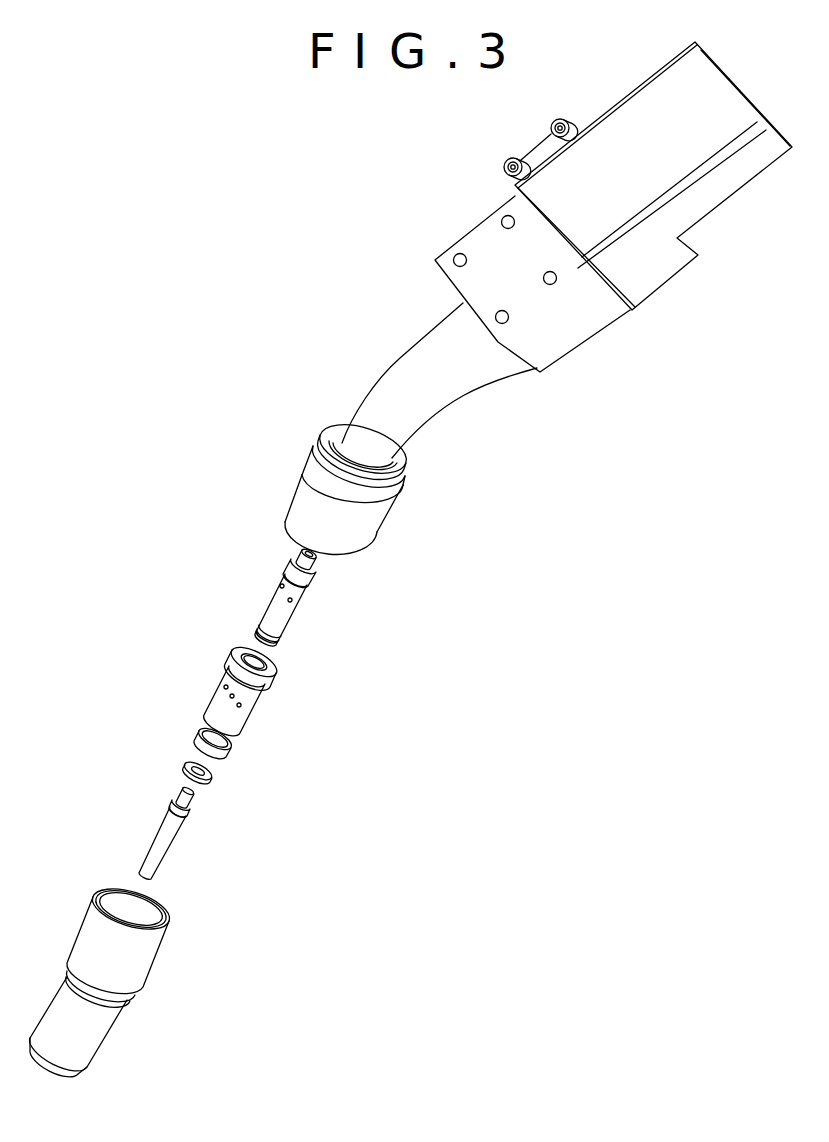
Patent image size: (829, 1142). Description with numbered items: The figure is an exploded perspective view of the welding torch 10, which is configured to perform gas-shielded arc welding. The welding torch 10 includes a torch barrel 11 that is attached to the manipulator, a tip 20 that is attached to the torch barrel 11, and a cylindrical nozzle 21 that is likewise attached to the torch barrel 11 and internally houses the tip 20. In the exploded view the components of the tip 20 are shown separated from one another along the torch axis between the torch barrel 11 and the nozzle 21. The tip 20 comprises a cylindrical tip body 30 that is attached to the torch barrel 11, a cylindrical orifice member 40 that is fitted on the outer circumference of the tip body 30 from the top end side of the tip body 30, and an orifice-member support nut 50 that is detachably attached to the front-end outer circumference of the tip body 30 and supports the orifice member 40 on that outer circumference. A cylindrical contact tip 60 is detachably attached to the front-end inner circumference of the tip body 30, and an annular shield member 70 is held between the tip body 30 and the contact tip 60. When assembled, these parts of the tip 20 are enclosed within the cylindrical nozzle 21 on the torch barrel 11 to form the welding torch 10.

The welding torch 10 is at (388, 364).
The torch barrel 11 is at (300, 508).
The tip 20 is at (182, 563).
The nozzle 21 is at (155, 955).
The tip body 30 is at (262, 612).
The orifice member 40 is at (214, 696).
The orifice-member support nut 50 is at (197, 742).
The contact tip 60 is at (162, 835).
The shield member 70 is at (186, 770).